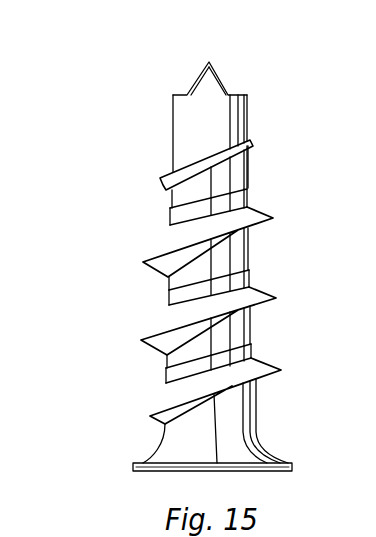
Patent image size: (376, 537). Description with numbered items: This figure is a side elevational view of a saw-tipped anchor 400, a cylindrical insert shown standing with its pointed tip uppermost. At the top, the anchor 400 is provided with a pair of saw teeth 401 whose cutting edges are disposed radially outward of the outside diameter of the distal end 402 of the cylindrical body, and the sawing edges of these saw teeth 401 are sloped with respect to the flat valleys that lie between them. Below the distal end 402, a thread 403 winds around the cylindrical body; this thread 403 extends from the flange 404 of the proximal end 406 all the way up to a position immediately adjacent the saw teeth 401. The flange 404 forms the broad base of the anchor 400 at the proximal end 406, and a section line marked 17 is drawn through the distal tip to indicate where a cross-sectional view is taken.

The anchor 400 is at (116, 270).
The saw teeth 401 is at (215, 87).
The distal end 402 is at (223, 163).
The thread 403 is at (252, 293).
The flange 404 is at (160, 446).
The proximal end 406 is at (245, 428).
The section line 17- 17 is at (209, 175).